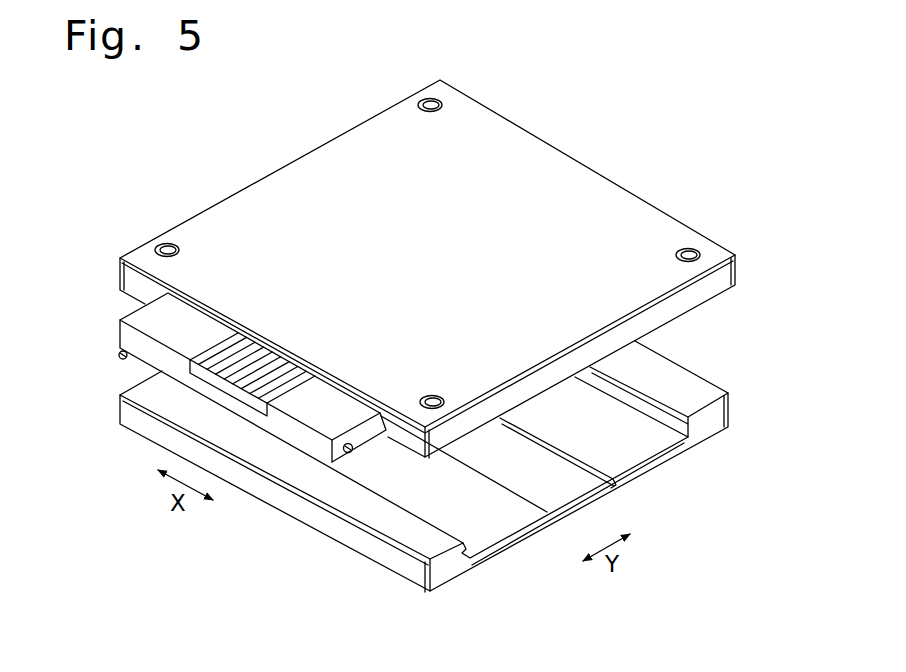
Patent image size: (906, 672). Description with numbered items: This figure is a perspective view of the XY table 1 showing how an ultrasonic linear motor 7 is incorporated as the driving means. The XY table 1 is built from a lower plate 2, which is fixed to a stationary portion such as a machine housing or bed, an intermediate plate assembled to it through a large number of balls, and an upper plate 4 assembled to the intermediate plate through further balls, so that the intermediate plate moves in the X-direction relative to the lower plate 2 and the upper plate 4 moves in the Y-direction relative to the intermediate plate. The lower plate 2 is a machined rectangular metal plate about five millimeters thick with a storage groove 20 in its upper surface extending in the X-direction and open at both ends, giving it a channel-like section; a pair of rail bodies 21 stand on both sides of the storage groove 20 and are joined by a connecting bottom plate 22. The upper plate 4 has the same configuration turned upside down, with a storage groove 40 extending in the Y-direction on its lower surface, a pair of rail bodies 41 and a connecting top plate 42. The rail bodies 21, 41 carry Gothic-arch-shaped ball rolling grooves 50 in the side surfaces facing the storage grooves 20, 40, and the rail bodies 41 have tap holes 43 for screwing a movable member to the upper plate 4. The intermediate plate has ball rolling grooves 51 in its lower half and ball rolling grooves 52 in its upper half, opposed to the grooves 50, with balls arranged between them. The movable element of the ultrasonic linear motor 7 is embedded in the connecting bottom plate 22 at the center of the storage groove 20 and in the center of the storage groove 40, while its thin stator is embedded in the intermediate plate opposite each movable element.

The XY table 1 is at (391, 345).
The lower plate 2 is at (426, 496).
The upper plate 4 is at (391, 328).
The ultrasonic linear motor 7 is at (214, 332).
The storage groove 20 is at (638, 452).
The rail bodies 21 is at (717, 423).
The connecting bottom plate 22 is at (527, 535).
The storage groove 40 is at (260, 371).
The rail bodies 41 is at (128, 273).
The connecting top plate 42 is at (353, 392).
The tap holes 43 is at (168, 245).
The ball rolling grooves 50 is at (655, 402).
The ball rolling grooves 51 is at (143, 361).
The ball rolling grooves 52 is at (362, 438).